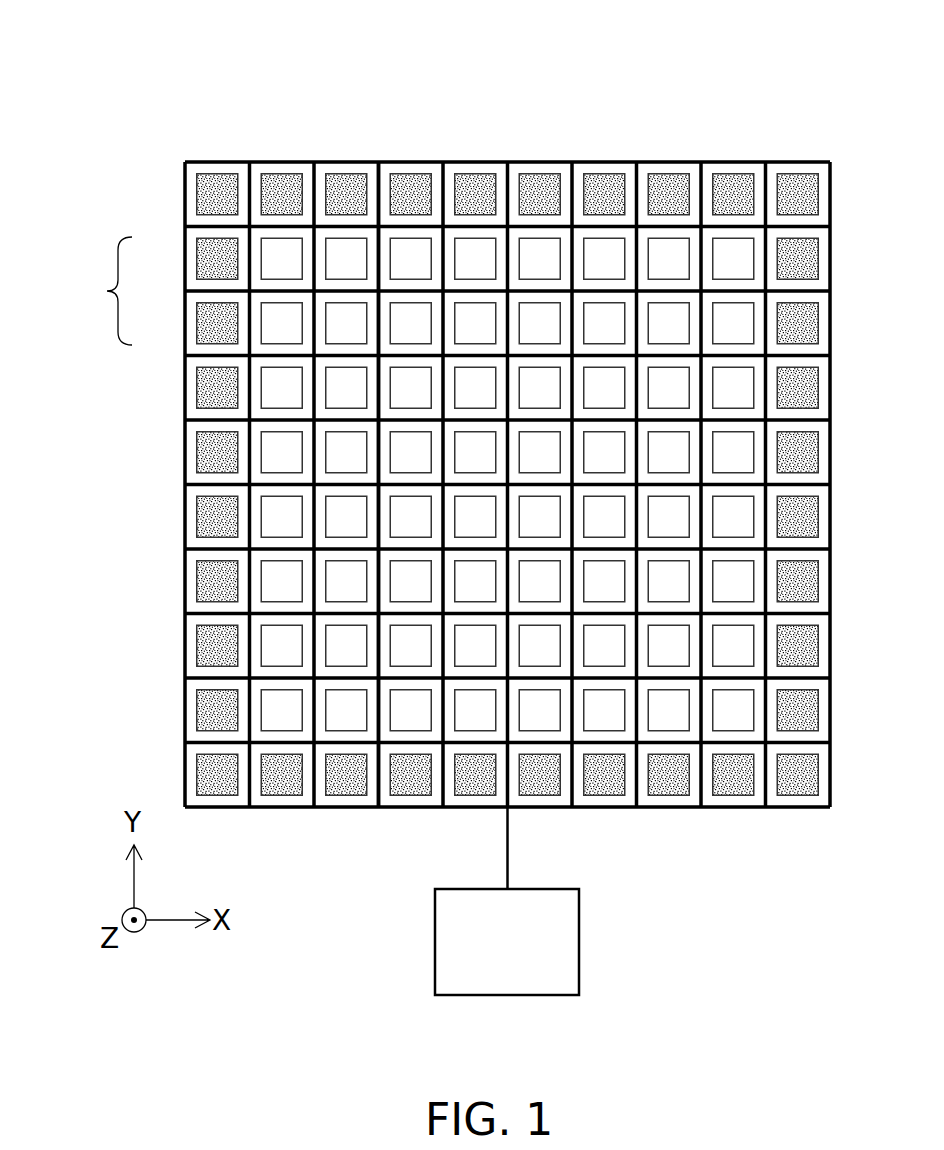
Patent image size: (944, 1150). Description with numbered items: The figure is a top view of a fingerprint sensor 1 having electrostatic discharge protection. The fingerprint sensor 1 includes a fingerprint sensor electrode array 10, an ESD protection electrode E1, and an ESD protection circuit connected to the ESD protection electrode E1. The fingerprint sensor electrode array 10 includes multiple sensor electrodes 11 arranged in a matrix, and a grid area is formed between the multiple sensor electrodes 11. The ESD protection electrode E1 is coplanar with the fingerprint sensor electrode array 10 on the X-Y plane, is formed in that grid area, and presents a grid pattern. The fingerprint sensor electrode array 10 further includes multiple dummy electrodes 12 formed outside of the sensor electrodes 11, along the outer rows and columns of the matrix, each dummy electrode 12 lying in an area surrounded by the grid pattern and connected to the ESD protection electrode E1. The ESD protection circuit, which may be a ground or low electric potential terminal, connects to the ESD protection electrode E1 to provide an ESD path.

The fingerprint sensor 1 is at (750, 76).
The fingerprint sensor electrode array 10 is at (107, 292).
The sensor electrode 11 is at (270, 255).
The dummy electrode 12 is at (217, 325).
The ESD protection electrode E1 is at (381, 162).